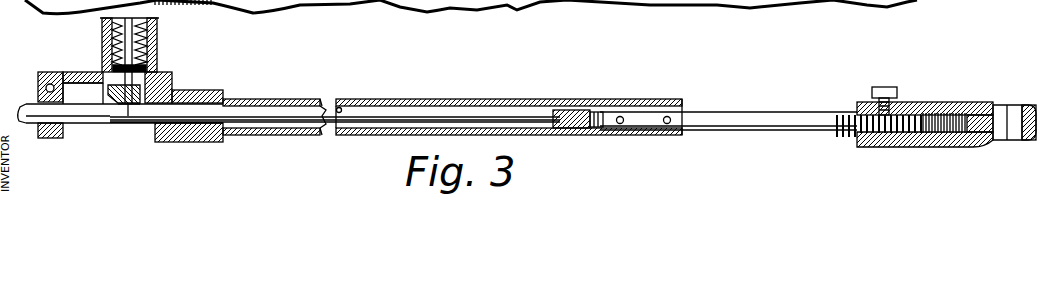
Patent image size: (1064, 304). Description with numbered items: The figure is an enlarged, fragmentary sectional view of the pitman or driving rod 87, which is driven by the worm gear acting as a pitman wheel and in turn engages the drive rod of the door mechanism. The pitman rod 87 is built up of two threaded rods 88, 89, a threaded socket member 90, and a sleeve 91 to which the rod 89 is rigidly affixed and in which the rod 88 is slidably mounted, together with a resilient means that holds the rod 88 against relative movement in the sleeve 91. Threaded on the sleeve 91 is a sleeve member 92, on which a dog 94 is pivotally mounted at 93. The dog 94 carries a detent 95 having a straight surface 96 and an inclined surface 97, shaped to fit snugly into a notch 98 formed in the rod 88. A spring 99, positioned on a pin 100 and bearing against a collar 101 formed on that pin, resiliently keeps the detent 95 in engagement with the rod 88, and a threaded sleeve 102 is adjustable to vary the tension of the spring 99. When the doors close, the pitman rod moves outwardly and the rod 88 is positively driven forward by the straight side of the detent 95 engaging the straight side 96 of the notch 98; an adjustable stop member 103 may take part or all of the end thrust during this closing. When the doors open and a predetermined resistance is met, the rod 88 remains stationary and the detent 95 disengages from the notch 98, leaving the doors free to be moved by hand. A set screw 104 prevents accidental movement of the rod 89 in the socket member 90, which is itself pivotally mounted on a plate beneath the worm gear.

The pitman rod 87 is at (668, 142).
The threaded rod 88 is at (348, 110).
The threaded rod 89 is at (725, 117).
The threaded socket member 90 is at (943, 102).
The sleeve 91 is at (443, 102).
The sleeve member 92 is at (175, 78).
The pivot 93 is at (52, 82).
The dog 94 is at (83, 90).
The detent 95 is at (130, 112).
The straight surface 96 is at (114, 105).
The inclined surface 97 is at (132, 110).
The notch 98 is at (126, 108).
The spring 99 is at (148, 60).
The pin 100 is at (157, 25).
The collar 101 is at (160, 62).
The threaded sleeve 102 is at (103, 18).
The adjustable stop member 103 is at (595, 112).
The set screw 104 is at (888, 90).